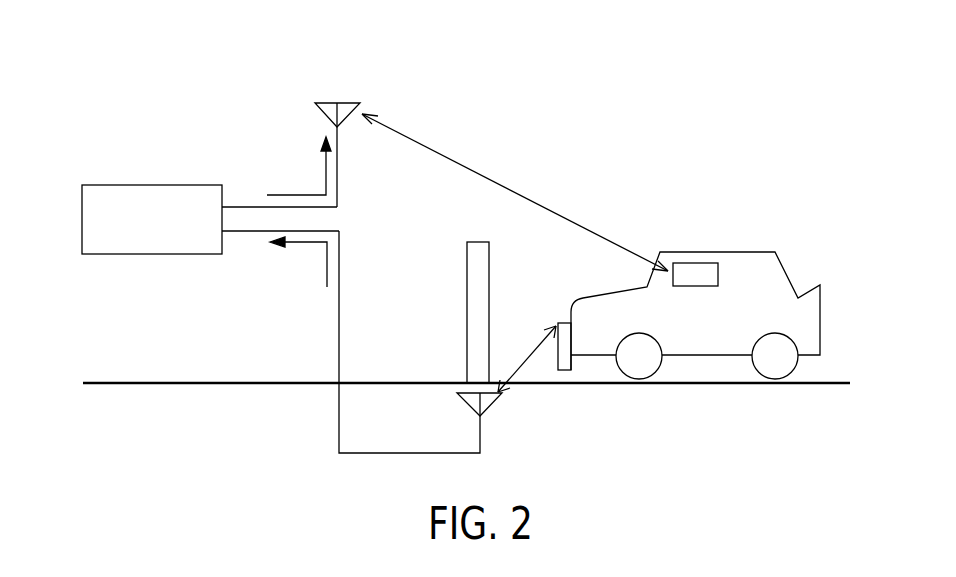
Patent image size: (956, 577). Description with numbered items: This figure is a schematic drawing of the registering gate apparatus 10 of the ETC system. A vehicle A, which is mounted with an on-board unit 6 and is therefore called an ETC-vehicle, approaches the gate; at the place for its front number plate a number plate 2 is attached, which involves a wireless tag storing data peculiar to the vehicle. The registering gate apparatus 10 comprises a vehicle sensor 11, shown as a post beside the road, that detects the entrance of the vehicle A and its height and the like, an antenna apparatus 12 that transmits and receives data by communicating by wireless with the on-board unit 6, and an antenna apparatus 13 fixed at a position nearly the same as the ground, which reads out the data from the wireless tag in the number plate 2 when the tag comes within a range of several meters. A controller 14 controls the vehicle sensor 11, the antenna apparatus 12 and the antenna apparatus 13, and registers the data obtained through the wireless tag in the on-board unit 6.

The number plate 2 is at (572, 372).
The on-board unit 6 is at (690, 263).
The registering gate apparatus 10 is at (522, 137).
The vehicle sensor 11 is at (467, 250).
The antenna apparatus 12 is at (323, 102).
The antenna apparatus 13 is at (490, 402).
The controller 14 is at (128, 185).
The vehicle A is at (762, 252).